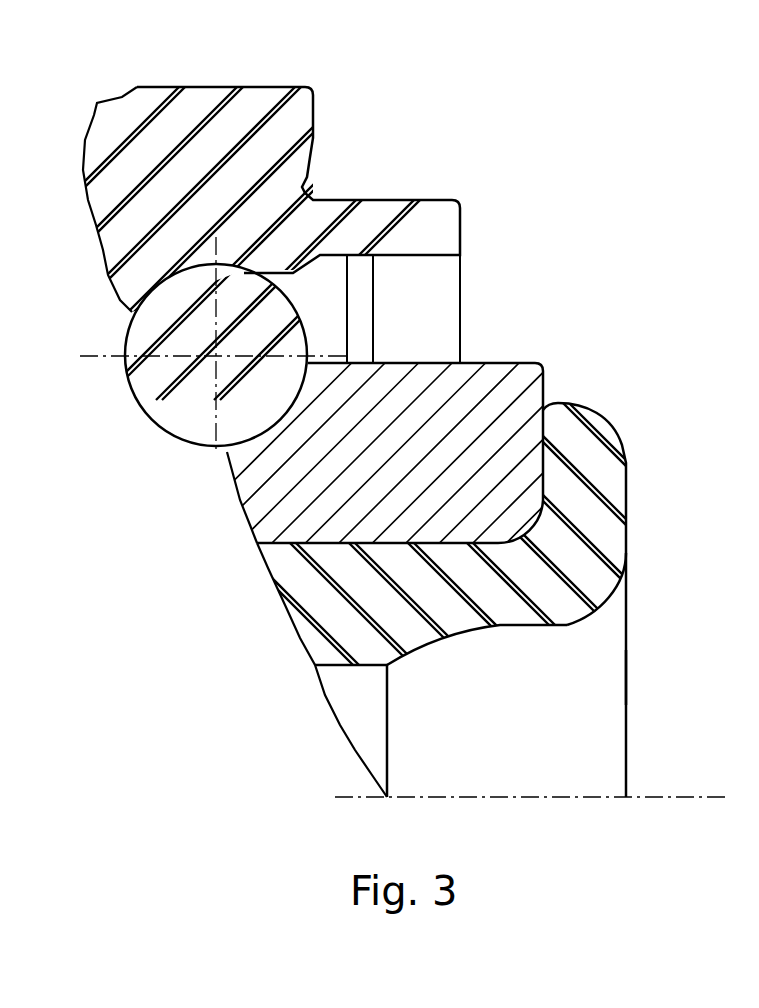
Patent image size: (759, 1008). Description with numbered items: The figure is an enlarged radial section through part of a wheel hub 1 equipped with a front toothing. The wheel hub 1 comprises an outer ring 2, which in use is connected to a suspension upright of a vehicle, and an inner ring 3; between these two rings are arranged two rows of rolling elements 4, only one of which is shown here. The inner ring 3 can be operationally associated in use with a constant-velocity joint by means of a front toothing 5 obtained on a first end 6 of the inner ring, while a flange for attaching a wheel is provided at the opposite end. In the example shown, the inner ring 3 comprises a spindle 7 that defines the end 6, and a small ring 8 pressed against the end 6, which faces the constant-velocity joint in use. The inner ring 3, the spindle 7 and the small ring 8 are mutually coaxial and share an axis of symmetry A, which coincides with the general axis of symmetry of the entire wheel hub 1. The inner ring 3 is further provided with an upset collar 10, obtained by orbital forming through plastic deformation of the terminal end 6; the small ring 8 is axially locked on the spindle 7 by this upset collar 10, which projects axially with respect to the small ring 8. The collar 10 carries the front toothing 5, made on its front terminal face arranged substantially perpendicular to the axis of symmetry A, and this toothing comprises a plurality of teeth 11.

The wheel hub 1 is at (580, 297).
The outer ring 2 is at (203, 104).
The inner ring 3 is at (238, 538).
The rolling elements 4 is at (192, 382).
The front toothing 5 is at (628, 609).
The first end 6 is at (547, 630).
The spindle 7 is at (308, 598).
The small ring 8 is at (249, 483).
The upset collar 10 is at (563, 426).
The teeth 11 is at (628, 698).
The axis of symmetry A is at (700, 797).